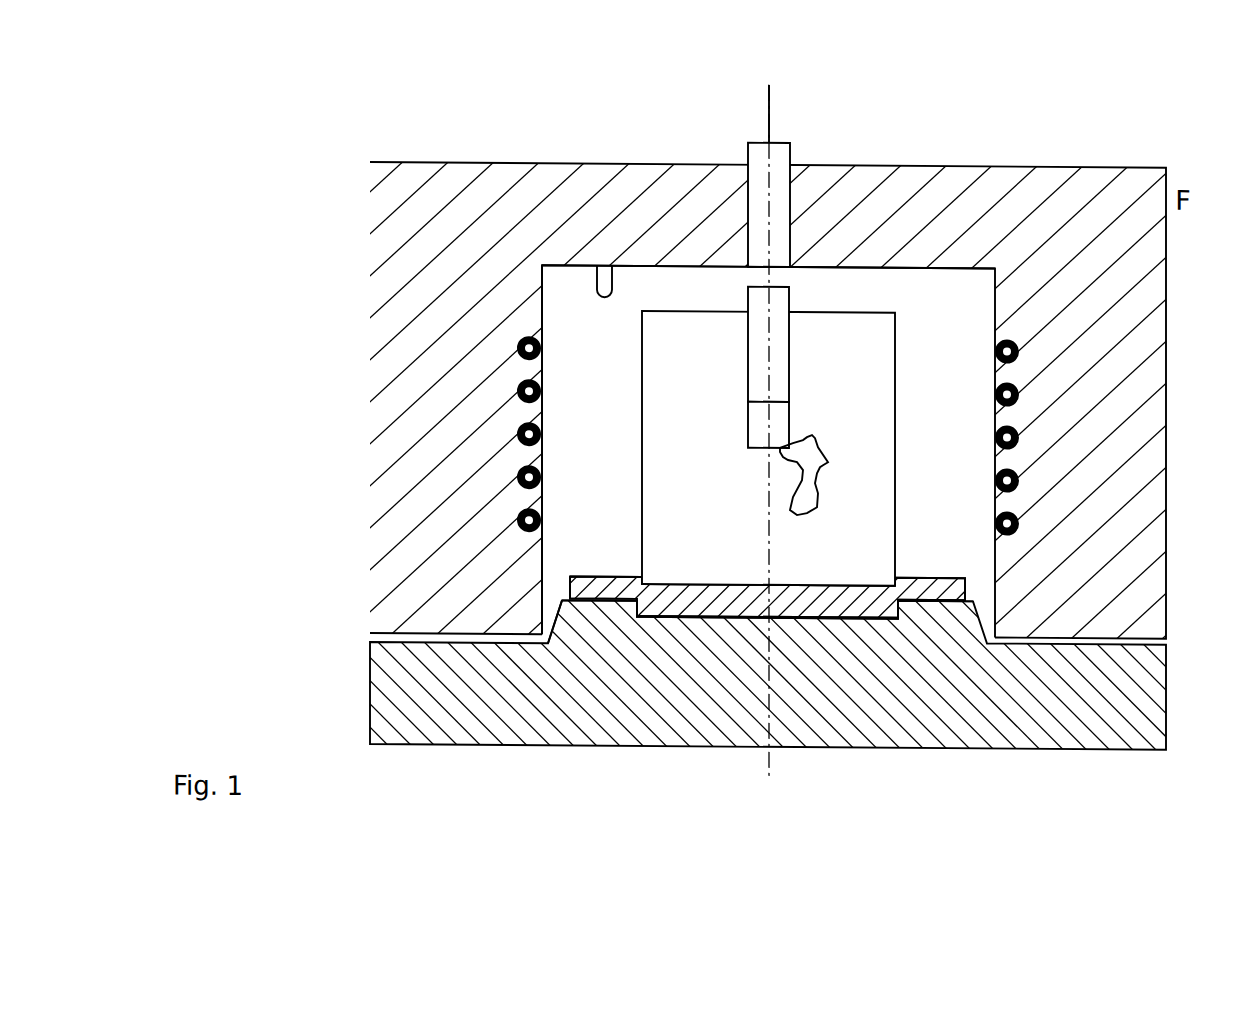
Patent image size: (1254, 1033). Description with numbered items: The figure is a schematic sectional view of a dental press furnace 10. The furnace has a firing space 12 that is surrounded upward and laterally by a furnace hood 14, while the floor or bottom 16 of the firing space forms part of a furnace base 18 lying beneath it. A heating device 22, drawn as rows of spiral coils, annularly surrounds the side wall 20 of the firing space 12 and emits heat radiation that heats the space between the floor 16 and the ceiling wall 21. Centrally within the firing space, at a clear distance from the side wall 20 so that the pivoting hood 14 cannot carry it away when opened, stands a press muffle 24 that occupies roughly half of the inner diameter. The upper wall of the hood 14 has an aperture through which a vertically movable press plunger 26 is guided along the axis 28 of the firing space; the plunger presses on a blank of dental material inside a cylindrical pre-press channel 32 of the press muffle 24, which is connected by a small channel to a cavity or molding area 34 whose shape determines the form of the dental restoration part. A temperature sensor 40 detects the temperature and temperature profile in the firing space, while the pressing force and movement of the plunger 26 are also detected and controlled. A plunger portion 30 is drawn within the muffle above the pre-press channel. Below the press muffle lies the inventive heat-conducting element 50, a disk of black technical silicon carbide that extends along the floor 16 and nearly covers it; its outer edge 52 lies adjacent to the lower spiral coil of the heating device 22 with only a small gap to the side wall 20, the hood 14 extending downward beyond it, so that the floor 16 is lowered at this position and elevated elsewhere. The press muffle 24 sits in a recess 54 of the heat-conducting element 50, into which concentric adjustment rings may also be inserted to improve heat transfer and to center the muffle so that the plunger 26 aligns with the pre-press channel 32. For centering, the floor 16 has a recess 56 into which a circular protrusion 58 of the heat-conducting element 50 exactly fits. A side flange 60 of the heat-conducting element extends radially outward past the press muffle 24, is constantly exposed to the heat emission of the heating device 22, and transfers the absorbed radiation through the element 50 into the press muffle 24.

The dental furnace 10 is at (1150, 129).
The firing space 12 is at (669, 285).
The furnace hood 14 is at (1137, 387).
The floor or bottom of the firing space 16 is at (546, 613).
The furnace base 18 is at (388, 702).
The side wall of the firing space 20 is at (548, 323).
The ceiling wall 21 is at (865, 268).
The heating device 22 is at (513, 475).
The press muffle 24 is at (864, 511).
The press plunger 26 is at (781, 155).
The axis of the firing space 28 is at (769, 113).
The plunger 30 is at (776, 350).
The pre-press channel 32 is at (776, 409).
The cavity or molding area 34 is at (818, 458).
The temperature sensor 40 is at (604, 279).
The heat-conducting element 50 is at (702, 600).
The outer edge of the heat-conducting element 52 is at (974, 588).
The recess of the heat-conducting element 54 is at (677, 580).
The recess of the floor 56 is at (834, 606).
The circular protrusion 58 is at (791, 620).
The side flange 60 is at (597, 586).